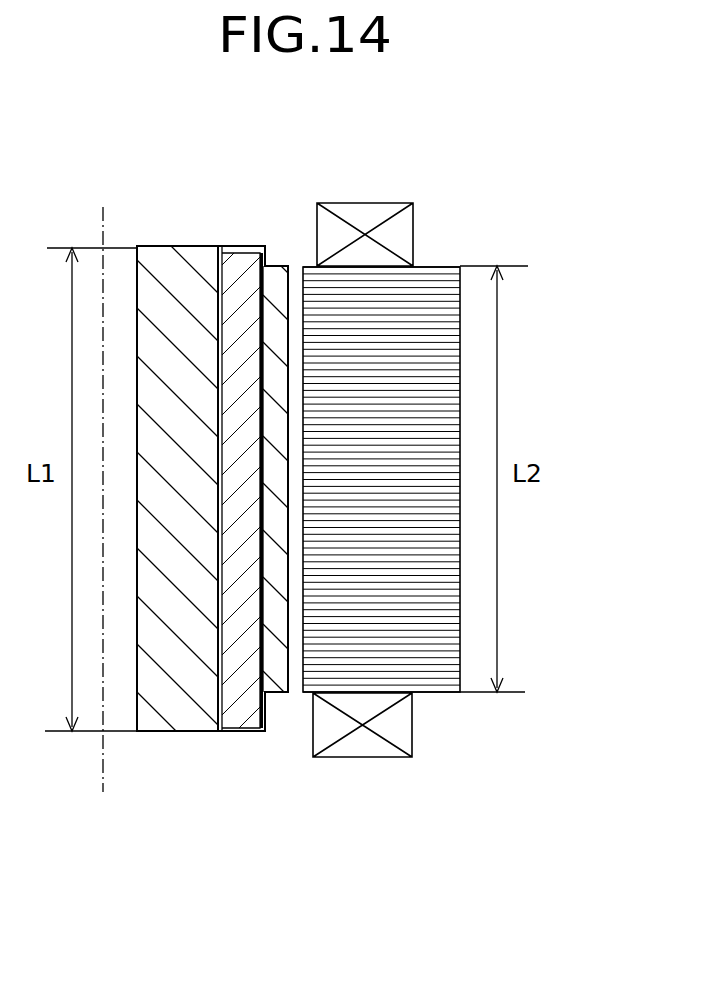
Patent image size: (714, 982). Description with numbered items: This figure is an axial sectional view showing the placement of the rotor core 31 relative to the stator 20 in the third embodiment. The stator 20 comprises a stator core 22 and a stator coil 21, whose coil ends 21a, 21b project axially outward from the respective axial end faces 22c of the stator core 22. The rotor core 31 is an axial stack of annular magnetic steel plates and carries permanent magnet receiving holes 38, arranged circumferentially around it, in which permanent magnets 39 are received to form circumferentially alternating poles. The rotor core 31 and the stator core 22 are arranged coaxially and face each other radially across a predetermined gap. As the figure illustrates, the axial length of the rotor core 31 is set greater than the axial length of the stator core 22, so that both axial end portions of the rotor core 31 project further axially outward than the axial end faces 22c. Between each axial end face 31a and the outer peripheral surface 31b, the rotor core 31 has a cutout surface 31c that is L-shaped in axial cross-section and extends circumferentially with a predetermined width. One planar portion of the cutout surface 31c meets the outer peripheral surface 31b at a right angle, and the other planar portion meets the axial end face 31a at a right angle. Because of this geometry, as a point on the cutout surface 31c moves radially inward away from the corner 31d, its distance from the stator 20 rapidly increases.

The stator 20 is at (435, 475).
The stator coil 21 is at (406, 475).
The coil end 21a is at (377, 212).
The coil end 21b is at (373, 745).
The stator core 22 is at (428, 262).
The axial end face 22c is at (445, 265).
The rotor core 31 is at (160, 243).
The axial end face 31a is at (211, 246).
The outer peripheral surface 31b is at (302, 272).
The cutout surface 31c is at (288, 265).
The corner 31d is at (288, 313).
The permanent magnet receiving hole 38 is at (218, 626).
The permanent magnet 39 is at (242, 690).